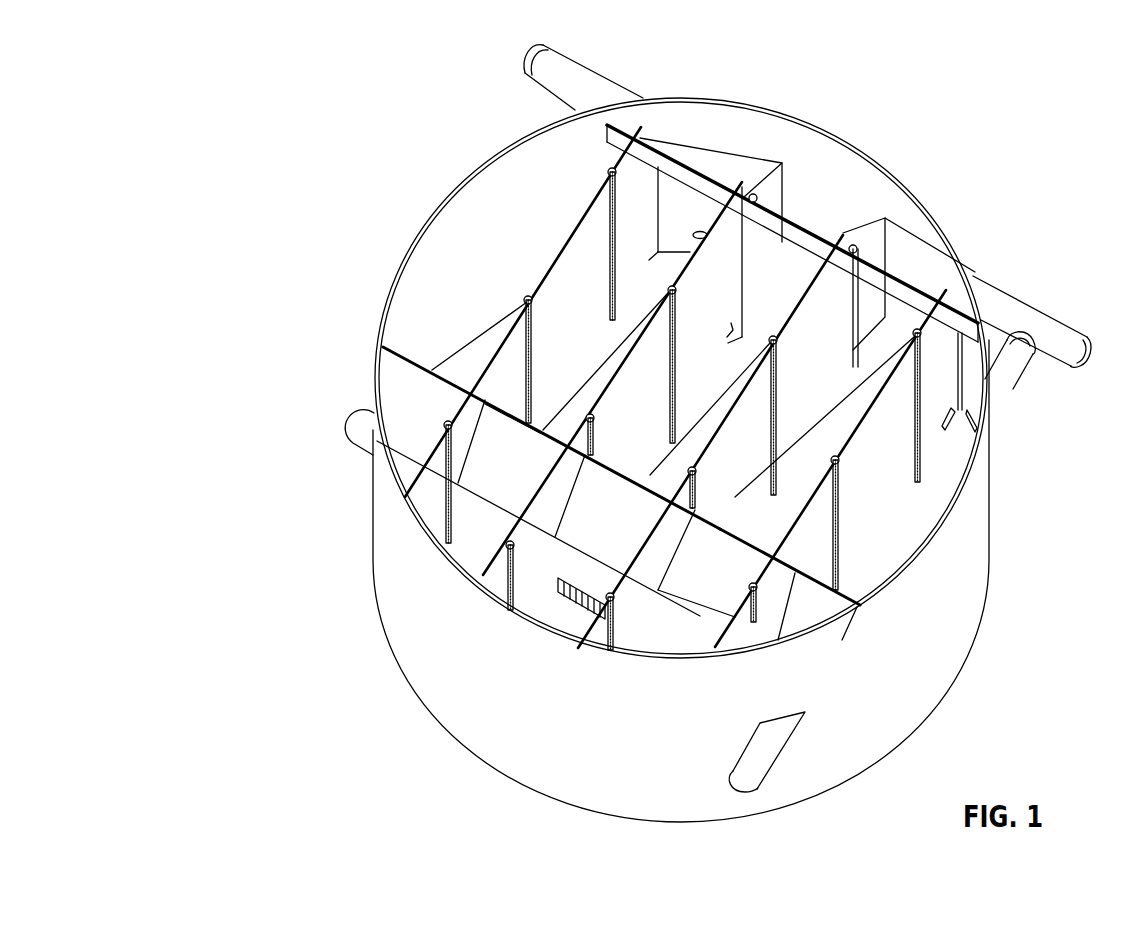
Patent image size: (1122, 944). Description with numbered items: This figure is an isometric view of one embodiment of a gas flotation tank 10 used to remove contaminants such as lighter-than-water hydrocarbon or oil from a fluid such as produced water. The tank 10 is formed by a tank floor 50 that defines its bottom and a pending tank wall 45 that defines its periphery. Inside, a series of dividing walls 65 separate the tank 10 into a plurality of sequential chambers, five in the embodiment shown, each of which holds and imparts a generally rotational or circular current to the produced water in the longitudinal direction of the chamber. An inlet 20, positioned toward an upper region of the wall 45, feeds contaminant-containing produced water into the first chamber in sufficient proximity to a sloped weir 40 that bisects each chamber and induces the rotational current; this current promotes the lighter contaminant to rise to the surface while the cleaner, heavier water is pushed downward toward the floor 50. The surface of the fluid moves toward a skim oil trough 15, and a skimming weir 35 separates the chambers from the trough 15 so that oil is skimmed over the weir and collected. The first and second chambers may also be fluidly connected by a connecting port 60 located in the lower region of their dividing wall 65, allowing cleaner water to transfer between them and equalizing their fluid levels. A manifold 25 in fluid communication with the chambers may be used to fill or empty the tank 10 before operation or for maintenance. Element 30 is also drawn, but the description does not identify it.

The gas flotation tank 10 is at (288, 440).
The skim oil trough 15 is at (746, 167).
The inlet 20 is at (768, 753).
The manifold 25 is at (1025, 322).
The port stub 30 is at (967, 427).
The skimming weir 35 is at (888, 270).
The sloped weir 40 is at (822, 610).
The tank wall 45 is at (550, 777).
The tank floor 50 is at (473, 345).
The connecting port 60 is at (727, 337).
The dividing walls 65 is at (880, 578).